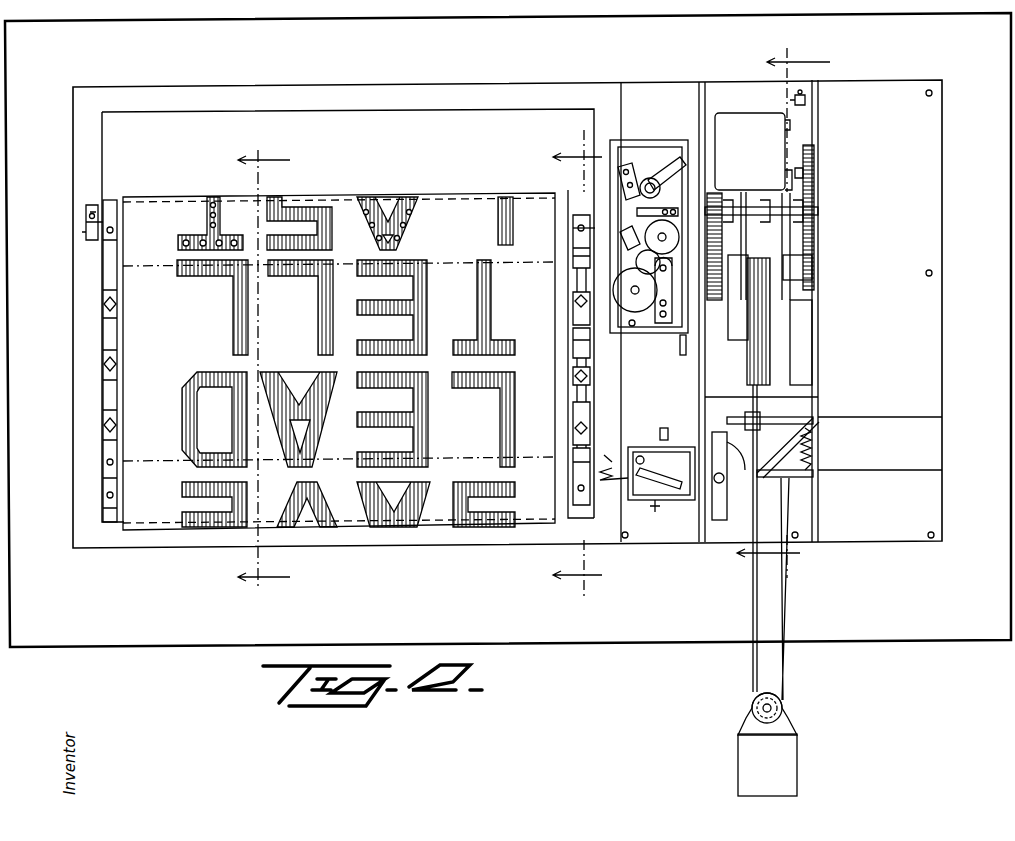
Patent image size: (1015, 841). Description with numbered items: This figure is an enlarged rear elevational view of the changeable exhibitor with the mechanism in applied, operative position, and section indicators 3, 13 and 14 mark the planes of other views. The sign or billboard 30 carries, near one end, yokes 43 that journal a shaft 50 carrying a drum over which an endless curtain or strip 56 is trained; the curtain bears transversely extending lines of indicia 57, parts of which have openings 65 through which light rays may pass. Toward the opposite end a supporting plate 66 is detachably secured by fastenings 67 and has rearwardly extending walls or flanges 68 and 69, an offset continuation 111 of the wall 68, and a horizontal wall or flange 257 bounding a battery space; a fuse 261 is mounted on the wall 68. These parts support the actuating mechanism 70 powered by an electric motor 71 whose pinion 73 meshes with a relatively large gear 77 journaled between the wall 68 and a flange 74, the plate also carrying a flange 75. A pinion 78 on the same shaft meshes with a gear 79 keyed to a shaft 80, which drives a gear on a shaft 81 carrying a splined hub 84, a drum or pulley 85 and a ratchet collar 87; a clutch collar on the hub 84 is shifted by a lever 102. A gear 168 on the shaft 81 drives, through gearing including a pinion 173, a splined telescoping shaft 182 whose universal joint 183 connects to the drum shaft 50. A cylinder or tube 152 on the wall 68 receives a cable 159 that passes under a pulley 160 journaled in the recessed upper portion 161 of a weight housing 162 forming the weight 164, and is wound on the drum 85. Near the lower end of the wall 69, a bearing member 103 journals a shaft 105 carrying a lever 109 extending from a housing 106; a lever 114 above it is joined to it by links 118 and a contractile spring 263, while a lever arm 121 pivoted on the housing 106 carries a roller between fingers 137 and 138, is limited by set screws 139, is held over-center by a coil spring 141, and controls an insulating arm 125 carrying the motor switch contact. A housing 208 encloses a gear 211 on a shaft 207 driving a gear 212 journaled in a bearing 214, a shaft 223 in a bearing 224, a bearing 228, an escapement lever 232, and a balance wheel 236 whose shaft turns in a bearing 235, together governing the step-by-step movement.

The section line 3- 3 is at (783, 301).
The section line 13- 13 is at (275, 368).
The section line 14- 14 is at (577, 366).
The sign or billboard 30 is at (917, 651).
The yoke or fork 43 is at (107, 463).
The shaft 50 is at (598, 222).
The endless curtain or strip 56 is at (597, 282).
The indicia 57 is at (197, 372).
The openings 65 is at (200, 236).
The supporting plate 66 is at (832, 290).
The fastenings 67 is at (946, 268).
The wall or flange 68 is at (820, 135).
The wall or flange 69 is at (704, 90).
The actuating mechanism 70 is at (782, 494).
The electric motor 71 is at (753, 151).
The pinion 73 is at (816, 162).
The flange 74 is at (816, 237).
The flange 75 is at (754, 246).
The relatively large gear 77 is at (816, 178).
The pinion 78 is at (805, 197).
The gear 79 is at (812, 247).
The shaft 80 is at (812, 275).
The shaft 81 is at (822, 322).
The splined hub 84 is at (775, 300).
The drum or pulley 85 is at (760, 370).
The collar 87 is at (734, 308).
The lever 102 is at (800, 366).
The bearing member 103 is at (714, 548).
The shaft 105 is at (725, 505).
The housing 106 is at (685, 502).
The lever 109 is at (727, 490).
The offset continuation of the wall 111 is at (880, 453).
The lever 114 is at (790, 392).
The links 118 is at (812, 445).
The lever arm 121 is at (640, 490).
The insulating arm 125 is at (628, 445).
The finger 137 is at (668, 505).
The finger 138 is at (668, 452).
The adjustable set screw 139 is at (665, 428).
The contractile coil spring 141 is at (790, 492).
The cylinder or tube 152 is at (812, 350).
The cable 159 is at (790, 624).
The pulley 160 is at (752, 710).
The recessed upper portion 161 is at (790, 718).
The weight housing 162 is at (743, 768).
The weight 164 is at (808, 787).
The gear 168 is at (683, 358).
The pinion 173 is at (735, 200).
The splined telescoping shaft 182 is at (572, 248).
The universal joint 183 is at (572, 222).
The shaft 207 is at (618, 300).
The housing 208 is at (660, 335).
The gear 211 is at (635, 288).
The gear 212 is at (658, 271).
The bearing 214 is at (660, 360).
The shaft 223 is at (640, 235).
The bearing 224 is at (630, 255).
The bearing 228 is at (692, 203).
The escapement lever 232 is at (612, 200).
The bearing 235 is at (662, 165).
The balance wheel 236 is at (650, 178).
The horizontal wall or flange 257 is at (876, 398).
The fuse 261 is at (808, 95).
The contractile spring 263 is at (813, 473).